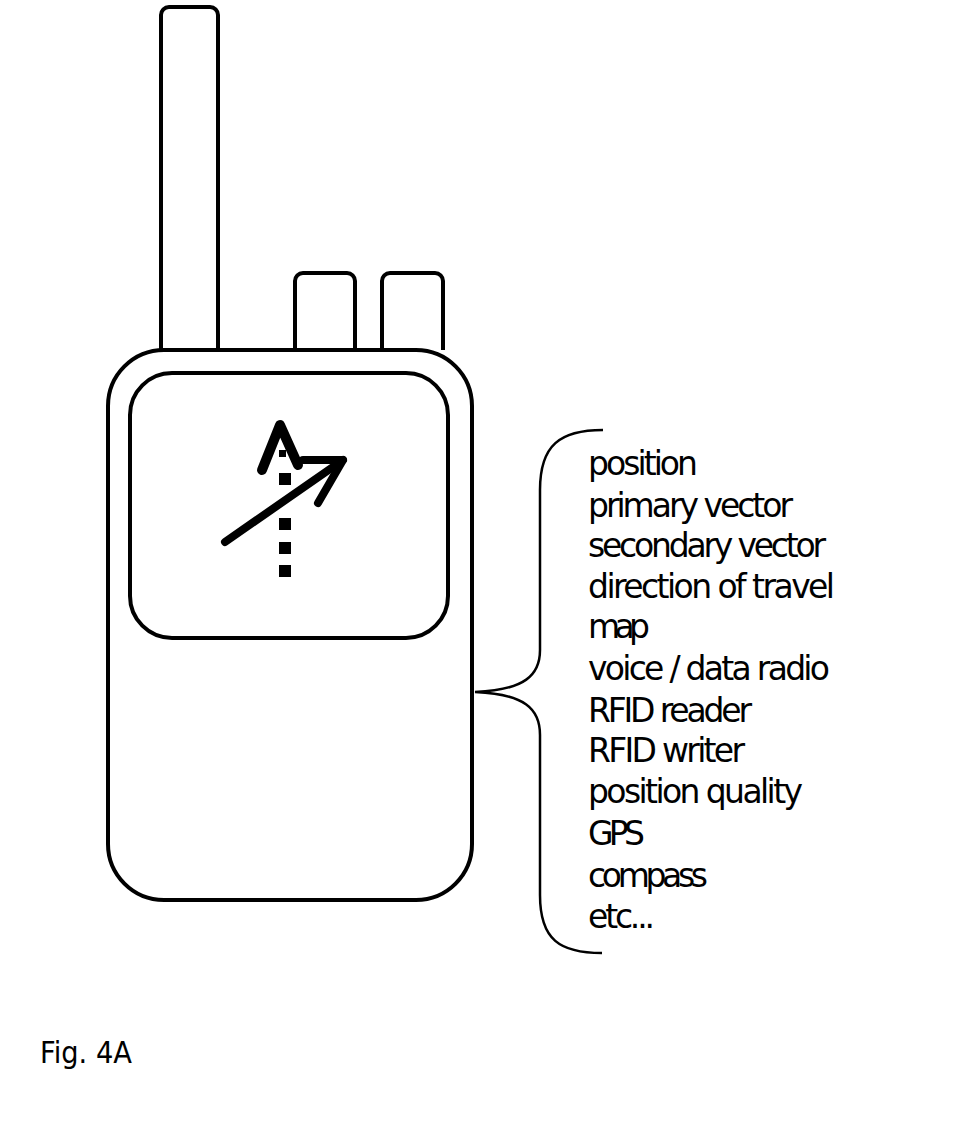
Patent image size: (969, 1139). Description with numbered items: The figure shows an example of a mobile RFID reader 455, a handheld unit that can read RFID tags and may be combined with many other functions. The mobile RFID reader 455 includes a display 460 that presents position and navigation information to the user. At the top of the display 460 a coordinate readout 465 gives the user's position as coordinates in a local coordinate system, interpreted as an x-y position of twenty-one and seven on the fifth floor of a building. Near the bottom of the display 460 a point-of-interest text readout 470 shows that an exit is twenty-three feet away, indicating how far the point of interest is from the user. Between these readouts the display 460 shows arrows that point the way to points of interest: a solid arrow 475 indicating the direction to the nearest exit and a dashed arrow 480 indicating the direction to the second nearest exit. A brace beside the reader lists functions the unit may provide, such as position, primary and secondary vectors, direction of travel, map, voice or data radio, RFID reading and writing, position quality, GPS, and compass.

The mobile RFID reader 455 is at (220, 816).
The display 460 is at (424, 584).
The position coordinate readout 465 is at (243, 401).
The point-of-interest text readout 470 is at (263, 612).
The solid arrow 475 is at (225, 522).
The dashed arrow 480 is at (298, 543).